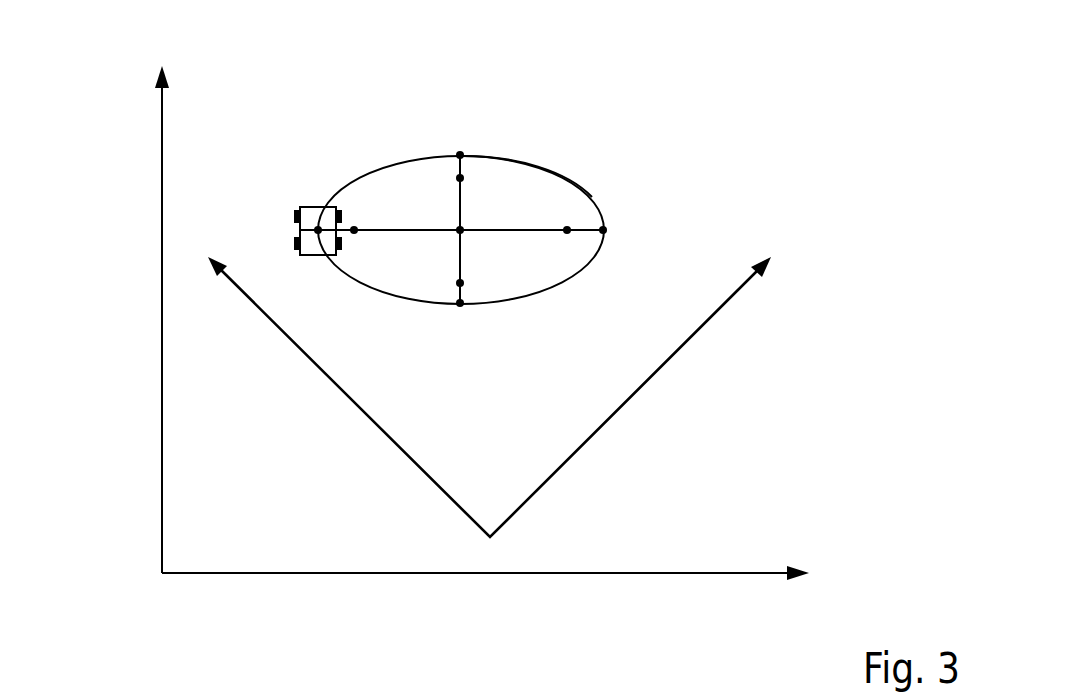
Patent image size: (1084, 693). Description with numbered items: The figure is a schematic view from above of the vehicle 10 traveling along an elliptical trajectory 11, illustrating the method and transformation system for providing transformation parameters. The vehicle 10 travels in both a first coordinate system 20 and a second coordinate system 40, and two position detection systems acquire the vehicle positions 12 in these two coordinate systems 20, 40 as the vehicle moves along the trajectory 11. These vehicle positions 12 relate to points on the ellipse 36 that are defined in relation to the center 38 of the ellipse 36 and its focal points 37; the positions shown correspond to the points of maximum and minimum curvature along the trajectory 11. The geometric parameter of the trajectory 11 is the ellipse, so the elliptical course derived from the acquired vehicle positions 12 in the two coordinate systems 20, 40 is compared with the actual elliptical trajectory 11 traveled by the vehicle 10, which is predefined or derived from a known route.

The vehicle 10 is at (320, 207).
The trajectory 11 is at (415, 160).
The vehicle positions 12 is at (300, 230).
The first coordinate system 20 is at (367, 413).
The ellipse 36 is at (592, 197).
The focal points 37 is at (354, 228).
The center 38 is at (460, 230).
The second coordinate system 40 is at (740, 573).